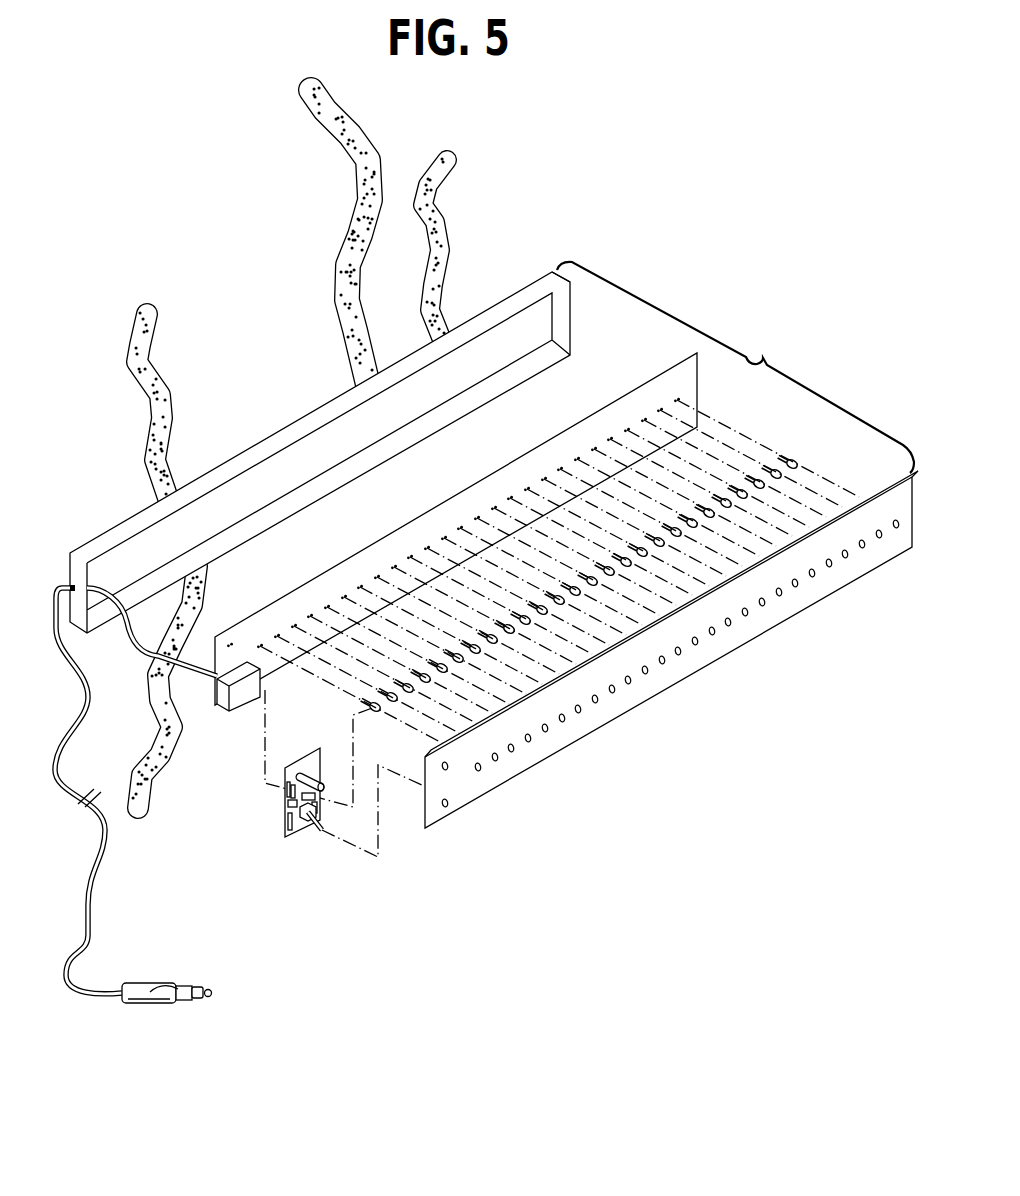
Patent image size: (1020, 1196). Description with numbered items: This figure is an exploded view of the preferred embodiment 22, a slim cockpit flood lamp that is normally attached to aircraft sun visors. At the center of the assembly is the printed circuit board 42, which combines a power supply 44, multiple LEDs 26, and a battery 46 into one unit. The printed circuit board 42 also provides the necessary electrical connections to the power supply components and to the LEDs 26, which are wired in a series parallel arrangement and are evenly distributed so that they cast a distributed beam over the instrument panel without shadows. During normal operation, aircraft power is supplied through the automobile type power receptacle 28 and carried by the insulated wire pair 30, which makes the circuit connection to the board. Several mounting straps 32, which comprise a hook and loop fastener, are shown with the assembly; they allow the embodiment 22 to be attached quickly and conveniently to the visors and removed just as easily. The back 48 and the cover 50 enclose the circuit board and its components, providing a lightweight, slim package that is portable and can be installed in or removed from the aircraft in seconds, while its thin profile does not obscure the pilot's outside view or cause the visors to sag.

The preferred embodiment 22 is at (735, 367).
The LEDs 26 is at (813, 448).
The power receptacle 28 is at (140, 1003).
The insulated wire pair 30 is at (93, 917).
The mounting straps 32 is at (130, 338).
The printed circuit board 42 is at (547, 443).
The power supply 44 is at (290, 833).
The battery 46 is at (222, 703).
The back 48 is at (293, 422).
The cover 50 is at (685, 684).